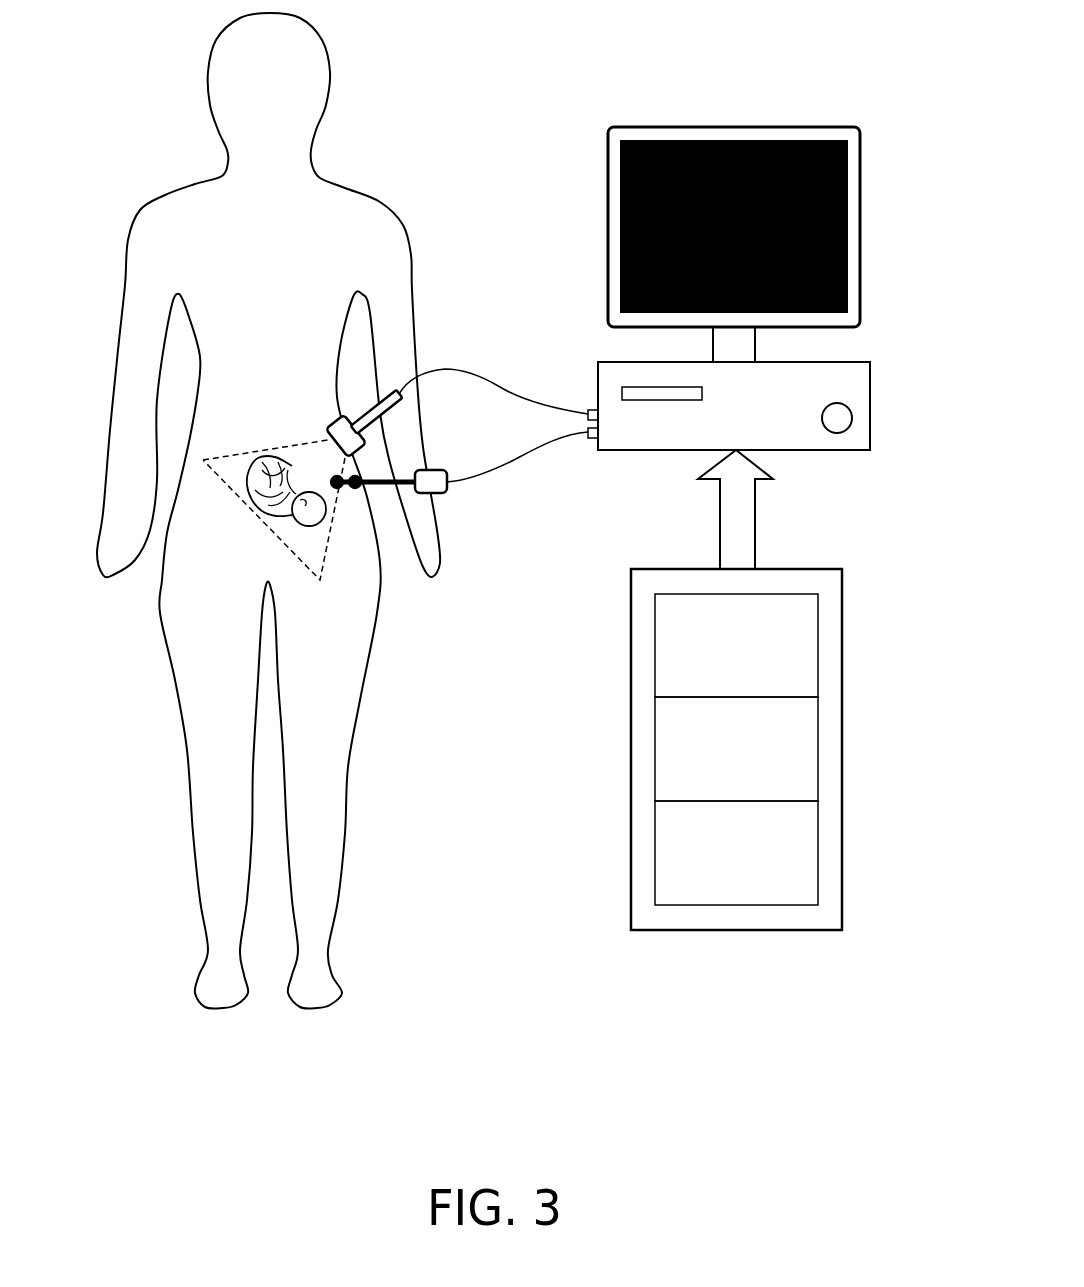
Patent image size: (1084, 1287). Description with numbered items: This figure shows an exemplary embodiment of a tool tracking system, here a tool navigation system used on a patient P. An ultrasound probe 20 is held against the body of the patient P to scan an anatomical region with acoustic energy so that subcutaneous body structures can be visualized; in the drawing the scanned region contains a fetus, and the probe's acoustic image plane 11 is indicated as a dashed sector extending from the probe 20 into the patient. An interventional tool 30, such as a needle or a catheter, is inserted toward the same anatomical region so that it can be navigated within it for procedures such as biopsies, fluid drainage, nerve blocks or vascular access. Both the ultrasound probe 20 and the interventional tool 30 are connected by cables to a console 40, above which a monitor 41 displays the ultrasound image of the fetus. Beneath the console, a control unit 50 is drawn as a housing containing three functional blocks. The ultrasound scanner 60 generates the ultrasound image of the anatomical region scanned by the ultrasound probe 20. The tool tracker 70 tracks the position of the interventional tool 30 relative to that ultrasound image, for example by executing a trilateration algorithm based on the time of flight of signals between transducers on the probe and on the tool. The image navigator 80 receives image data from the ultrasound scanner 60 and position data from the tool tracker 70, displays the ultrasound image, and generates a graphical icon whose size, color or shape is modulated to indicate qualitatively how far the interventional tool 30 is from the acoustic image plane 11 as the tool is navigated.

The patient P is at (400, 187).
The patient 11 is at (250, 520).
The ultrasound probe 20 is at (328, 417).
The interventional tool 30 is at (448, 505).
The ultrasound scanner console 40 is at (597, 380).
The display monitor 41 is at (587, 148).
The control system 50 is at (631, 667).
The ultrasound scanner 60 is at (820, 646).
The tool tracker 70 is at (820, 748).
The image navigator 80 is at (820, 852).